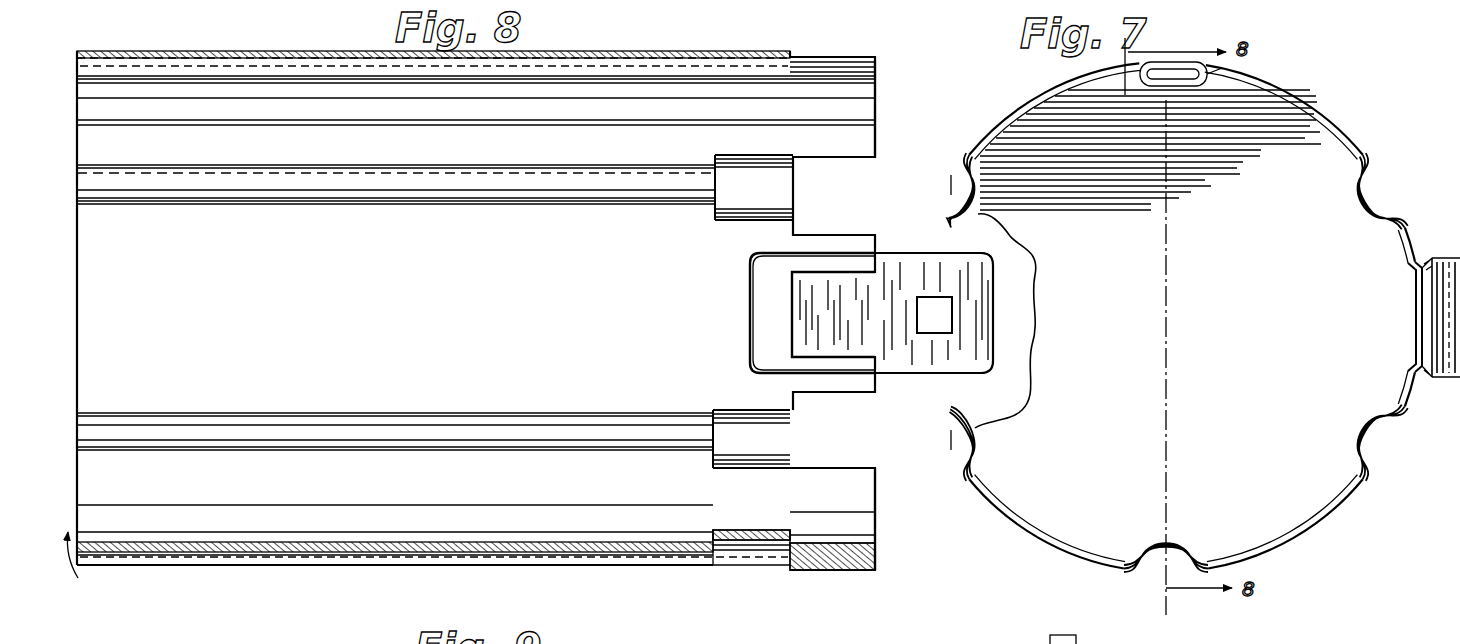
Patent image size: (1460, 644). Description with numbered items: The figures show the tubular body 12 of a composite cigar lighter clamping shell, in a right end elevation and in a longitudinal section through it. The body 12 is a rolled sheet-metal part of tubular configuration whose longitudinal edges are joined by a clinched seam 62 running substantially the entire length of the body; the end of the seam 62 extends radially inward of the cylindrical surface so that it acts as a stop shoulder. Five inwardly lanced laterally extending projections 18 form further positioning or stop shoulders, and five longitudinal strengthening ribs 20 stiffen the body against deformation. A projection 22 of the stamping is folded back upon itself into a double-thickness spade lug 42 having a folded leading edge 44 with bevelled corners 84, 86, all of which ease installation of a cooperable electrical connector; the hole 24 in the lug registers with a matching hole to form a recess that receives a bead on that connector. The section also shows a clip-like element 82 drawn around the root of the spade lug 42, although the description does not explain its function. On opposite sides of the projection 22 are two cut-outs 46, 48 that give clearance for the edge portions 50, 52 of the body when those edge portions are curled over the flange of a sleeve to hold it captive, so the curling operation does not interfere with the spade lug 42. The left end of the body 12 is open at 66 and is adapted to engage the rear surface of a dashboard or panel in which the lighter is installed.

In FIG. 8, the tubular body 12 is at (476, 310).
In FIG. 7, the tubular body 12 is at (1348, 118).
In FIG. 8, the laterally extending projections 18 is at (728, 208).
In FIG. 7, the laterally extending projections 18 is at (984, 166).
In FIG. 8, the longitudinal strengthening ribs 20 is at (565, 180).
In FIG. 7, the longitudinal strengthening ribs 20 is at (953, 178).
In FIG. 7, the projection 22 is at (1042, 640).
In FIG. 8, the hole 24 is at (940, 300).
In FIG. 8, the spade lug 42 is at (926, 352).
In FIG. 8, the folded leading edge 44 is at (993, 285).
In FIG. 8, the cut-out 46 is at (864, 192).
In FIG. 8, the cut-out 48 is at (862, 444).
In FIG. 8, the edge portion 50 is at (875, 108).
In FIG. 8, the edge portion 52 is at (875, 530).
In FIG. 8, the clinched seam 62 is at (632, 64).
In FIG. 7, the clinched seam 62 is at (1212, 62).
In FIG. 8, the open left end 66 is at (80, 568).
In FIG. 8, the clip 82 is at (748, 287).
In FIG. 8, the bevelled corner 84 is at (993, 256).
In FIG. 8, the bevelled corner 86 is at (989, 372).